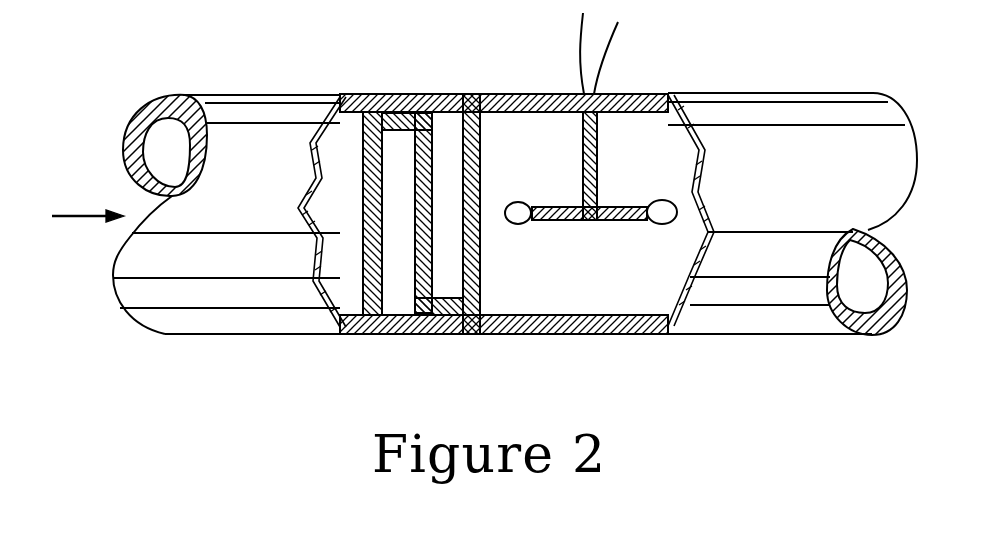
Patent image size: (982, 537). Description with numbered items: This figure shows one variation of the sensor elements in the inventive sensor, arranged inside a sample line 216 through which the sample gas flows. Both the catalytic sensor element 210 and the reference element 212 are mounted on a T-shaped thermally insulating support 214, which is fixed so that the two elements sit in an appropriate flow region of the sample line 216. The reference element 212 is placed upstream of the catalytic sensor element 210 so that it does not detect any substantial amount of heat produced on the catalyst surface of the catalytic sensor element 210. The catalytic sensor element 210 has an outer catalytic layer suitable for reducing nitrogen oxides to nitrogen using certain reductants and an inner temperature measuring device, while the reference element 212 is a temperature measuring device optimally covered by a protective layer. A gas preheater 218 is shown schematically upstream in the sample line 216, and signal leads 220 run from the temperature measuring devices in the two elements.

The catalytic sensor element 210 is at (661, 224).
The reference element 212 is at (516, 224).
The T-shaped thermally insulating support 214 is at (600, 148).
The sample line 216 is at (773, 335).
The gas preheater 218 is at (373, 94).
The signal leads 220 is at (558, 47).